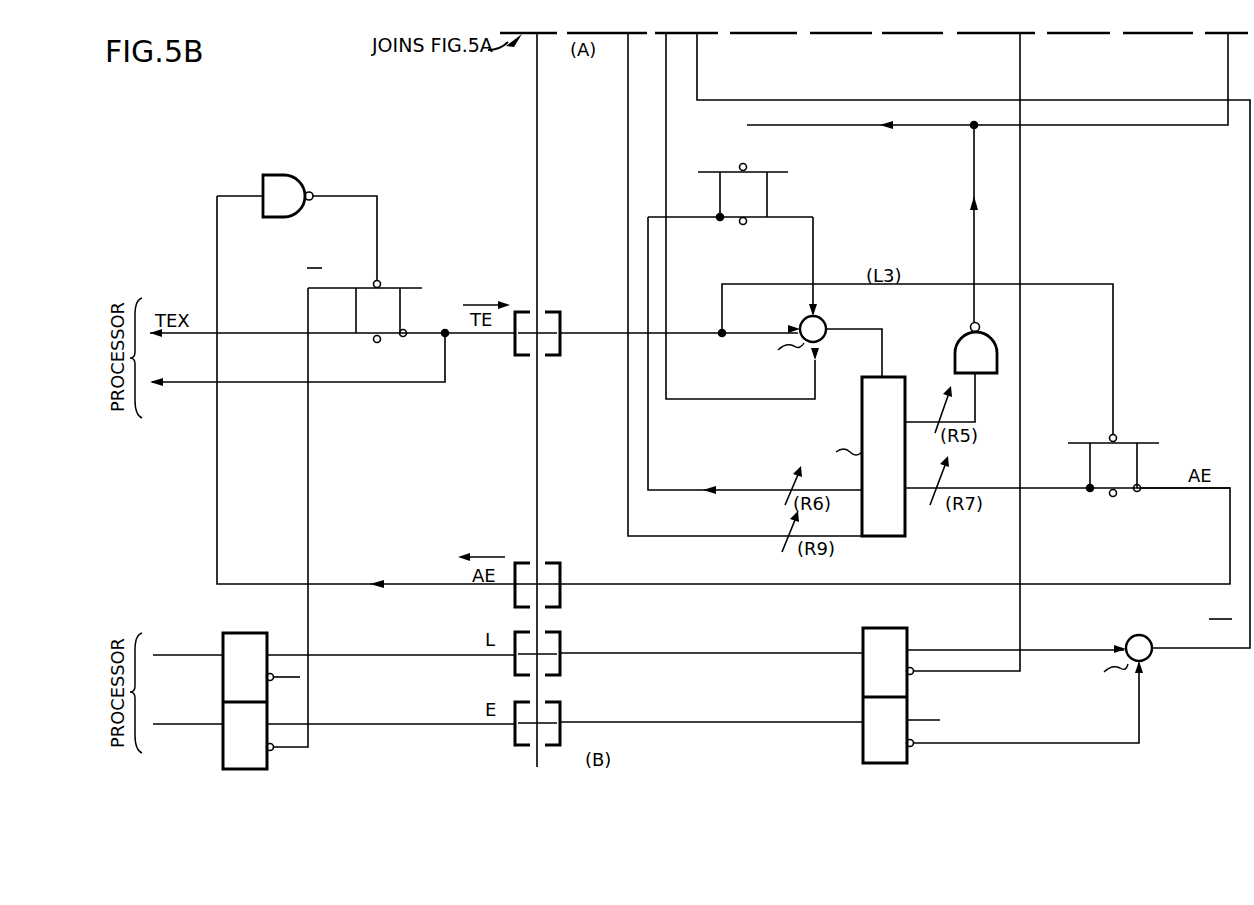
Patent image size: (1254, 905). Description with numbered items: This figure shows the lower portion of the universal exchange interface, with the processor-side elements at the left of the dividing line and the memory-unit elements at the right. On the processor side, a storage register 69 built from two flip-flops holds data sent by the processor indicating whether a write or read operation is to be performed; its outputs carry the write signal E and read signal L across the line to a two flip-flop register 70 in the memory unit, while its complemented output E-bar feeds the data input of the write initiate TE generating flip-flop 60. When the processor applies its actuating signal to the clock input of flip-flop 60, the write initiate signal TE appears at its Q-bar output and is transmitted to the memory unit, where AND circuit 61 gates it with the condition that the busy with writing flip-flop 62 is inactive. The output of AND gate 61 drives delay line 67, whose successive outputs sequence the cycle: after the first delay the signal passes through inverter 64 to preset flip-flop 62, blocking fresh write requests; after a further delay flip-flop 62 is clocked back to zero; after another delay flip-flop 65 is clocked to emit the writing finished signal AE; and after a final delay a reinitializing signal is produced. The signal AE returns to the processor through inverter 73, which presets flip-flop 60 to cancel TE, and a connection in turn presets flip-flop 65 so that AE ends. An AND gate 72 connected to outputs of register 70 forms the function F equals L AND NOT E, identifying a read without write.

The write initiate TE generating flip-flop 60 is at (364, 339).
The AND circuit 61 is at (824, 323).
The busy with writing flip-flop 62 is at (757, 222).
The inverter 64 is at (956, 358).
The flip-flop 65 is at (1128, 492).
The delay line 67 is at (862, 432).
The storage register 69 is at (223, 756).
The two flip-flop register 70 is at (863, 744).
The AND gate 72 is at (1130, 640).
The inverter 73 is at (292, 217).